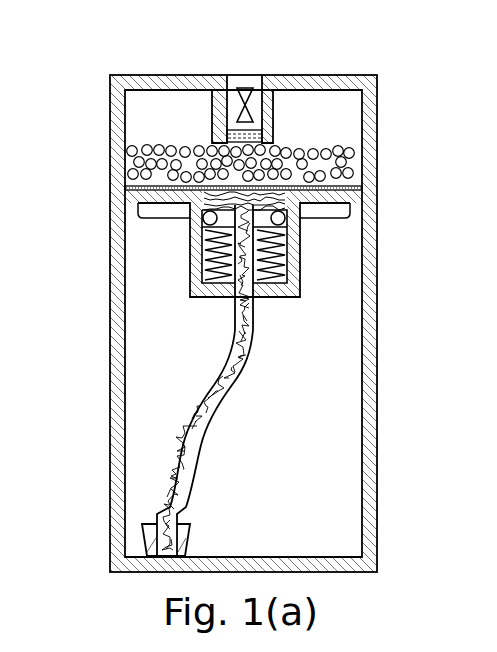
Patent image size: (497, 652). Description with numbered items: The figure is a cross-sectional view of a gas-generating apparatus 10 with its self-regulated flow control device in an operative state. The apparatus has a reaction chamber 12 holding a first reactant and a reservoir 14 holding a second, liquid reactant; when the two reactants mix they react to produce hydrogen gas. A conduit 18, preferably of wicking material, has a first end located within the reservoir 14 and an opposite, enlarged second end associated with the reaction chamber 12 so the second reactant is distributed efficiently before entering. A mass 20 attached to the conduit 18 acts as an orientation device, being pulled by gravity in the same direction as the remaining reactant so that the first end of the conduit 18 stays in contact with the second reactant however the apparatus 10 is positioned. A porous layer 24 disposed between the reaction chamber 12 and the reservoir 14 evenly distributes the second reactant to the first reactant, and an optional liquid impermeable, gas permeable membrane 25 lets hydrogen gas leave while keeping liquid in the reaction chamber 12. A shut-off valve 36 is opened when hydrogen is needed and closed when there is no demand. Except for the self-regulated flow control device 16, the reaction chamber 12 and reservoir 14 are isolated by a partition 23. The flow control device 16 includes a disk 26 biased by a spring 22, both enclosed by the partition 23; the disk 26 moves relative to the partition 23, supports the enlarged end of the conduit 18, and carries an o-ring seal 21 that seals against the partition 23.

The gas-generating apparatus 10 is at (95, 67).
The reaction chamber 12 is at (350, 108).
The reservoir 14 is at (343, 332).
The self-regulated flow control device 16 is at (192, 242).
The conduit 18 is at (170, 462).
The mass 20 is at (148, 535).
The seal 21 is at (285, 218).
The spring 22 is at (203, 275).
The partition 23 is at (292, 272).
The layer 24 is at (125, 188).
The liquid impermeable, gas permeable membrane 25 is at (263, 138).
The disk 26 is at (207, 200).
The valve 36 is at (241, 88).